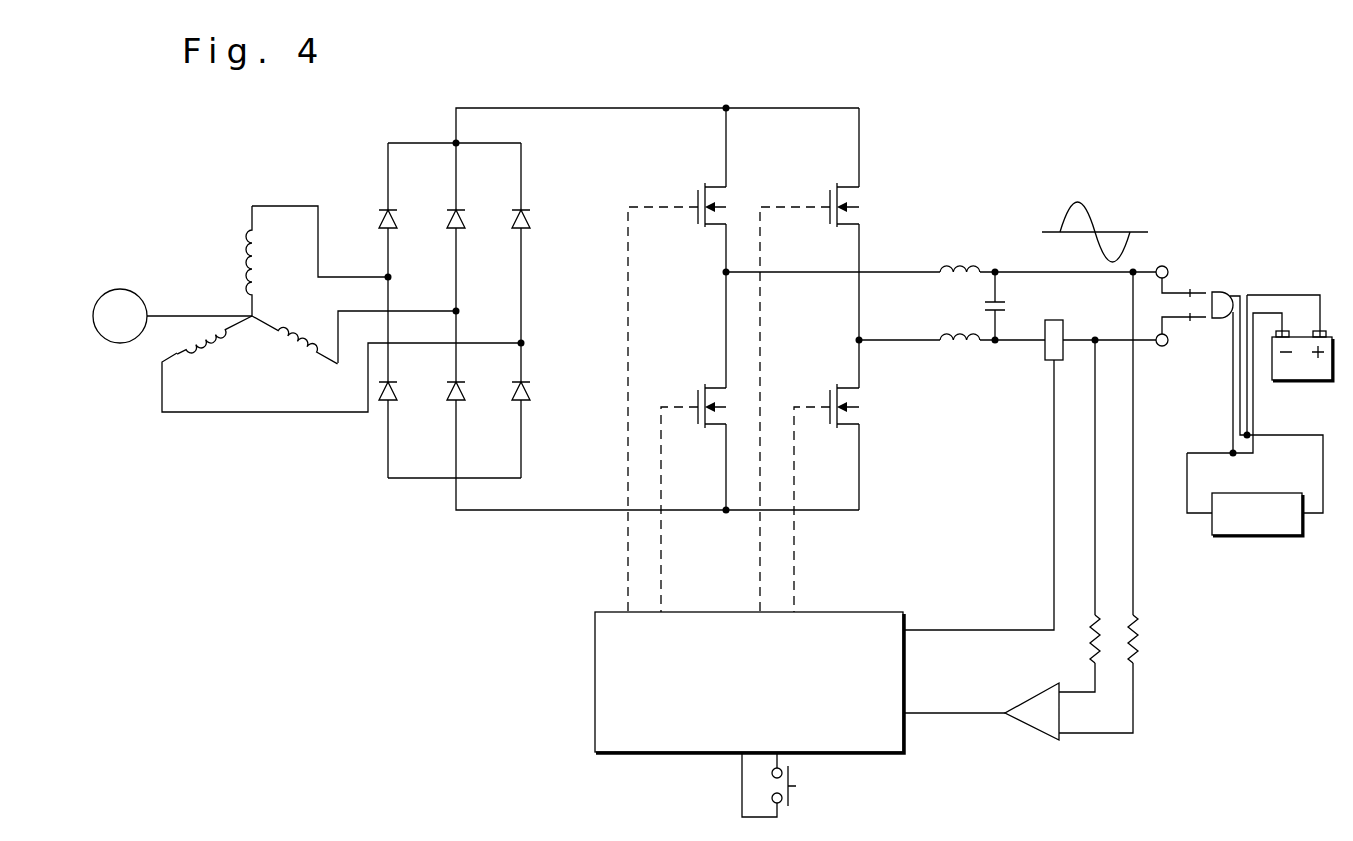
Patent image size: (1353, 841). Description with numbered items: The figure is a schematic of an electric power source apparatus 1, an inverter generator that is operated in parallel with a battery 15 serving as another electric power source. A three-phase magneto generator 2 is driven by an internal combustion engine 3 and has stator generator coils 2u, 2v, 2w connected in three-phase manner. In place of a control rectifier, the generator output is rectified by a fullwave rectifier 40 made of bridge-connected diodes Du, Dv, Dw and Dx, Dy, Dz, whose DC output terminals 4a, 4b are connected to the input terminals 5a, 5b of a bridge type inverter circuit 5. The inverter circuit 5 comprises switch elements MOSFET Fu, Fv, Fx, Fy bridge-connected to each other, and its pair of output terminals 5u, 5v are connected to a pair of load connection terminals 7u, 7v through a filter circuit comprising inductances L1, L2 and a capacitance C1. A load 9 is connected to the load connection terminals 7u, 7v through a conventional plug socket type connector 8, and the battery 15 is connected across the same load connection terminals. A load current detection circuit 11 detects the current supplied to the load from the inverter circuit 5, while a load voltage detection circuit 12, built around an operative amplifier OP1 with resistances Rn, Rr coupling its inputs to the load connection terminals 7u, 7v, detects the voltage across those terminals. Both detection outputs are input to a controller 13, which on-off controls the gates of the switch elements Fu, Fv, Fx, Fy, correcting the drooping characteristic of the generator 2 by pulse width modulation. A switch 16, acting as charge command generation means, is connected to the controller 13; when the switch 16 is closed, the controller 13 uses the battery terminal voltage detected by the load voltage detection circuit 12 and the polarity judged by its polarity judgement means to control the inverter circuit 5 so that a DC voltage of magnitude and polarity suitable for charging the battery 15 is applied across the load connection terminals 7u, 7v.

The electric power source apparatus 1 is at (920, 114).
The three-phase magneto generator 2 is at (221, 258).
The generator coil 2u is at (245, 254).
The generator coil 2v is at (293, 346).
The generator coil 2w is at (183, 346).
The internal combustion engine 3 is at (119, 289).
The fullwave rectifier 40 is at (431, 253).
The DC output terminal 4a is at (515, 106).
The DC output terminal 4b is at (484, 512).
The bridge type inverter circuit 5 is at (752, 306).
The input terminal of the inverter circuit 5a is at (684, 106).
The input terminal of the inverter circuit 5b is at (574, 512).
The output terminal of the inverter circuit 5u is at (905, 270).
The output terminal of the inverter circuit 5v is at (910, 342).
The load connection terminal 7u is at (1165, 265).
The load connection terminal 7v is at (1165, 347).
The plug socket type connector 8 is at (1221, 280).
The load 9 is at (1262, 536).
The load current detection circuit 11 is at (1045, 352).
The load voltage detection circuit 12 is at (1064, 528).
The controller 13 is at (880, 603).
The battery 15 is at (1295, 381).
The switch 16 is at (796, 786).
The diode Du is at (385, 215).
The diode Dv is at (452, 230).
The diode Dw is at (518, 230).
The diode Dx is at (385, 403).
The diode Dy is at (452, 403).
The diode Dz is at (518, 403).
The switch element MOSFET Fu is at (698, 227).
The switch element MOSFET Fv is at (830, 226).
The switch element MOSFET Fx is at (700, 428).
The switch element MOSFET Fy is at (832, 428).
The inductance L1 is at (958, 265).
The inductance L2 is at (962, 333).
The capacitance C1 is at (1005, 298).
The resistor Rn is at (1141, 640).
The resistor Rr is at (1103, 650).
The operative amplifier OP1 is at (1035, 741).